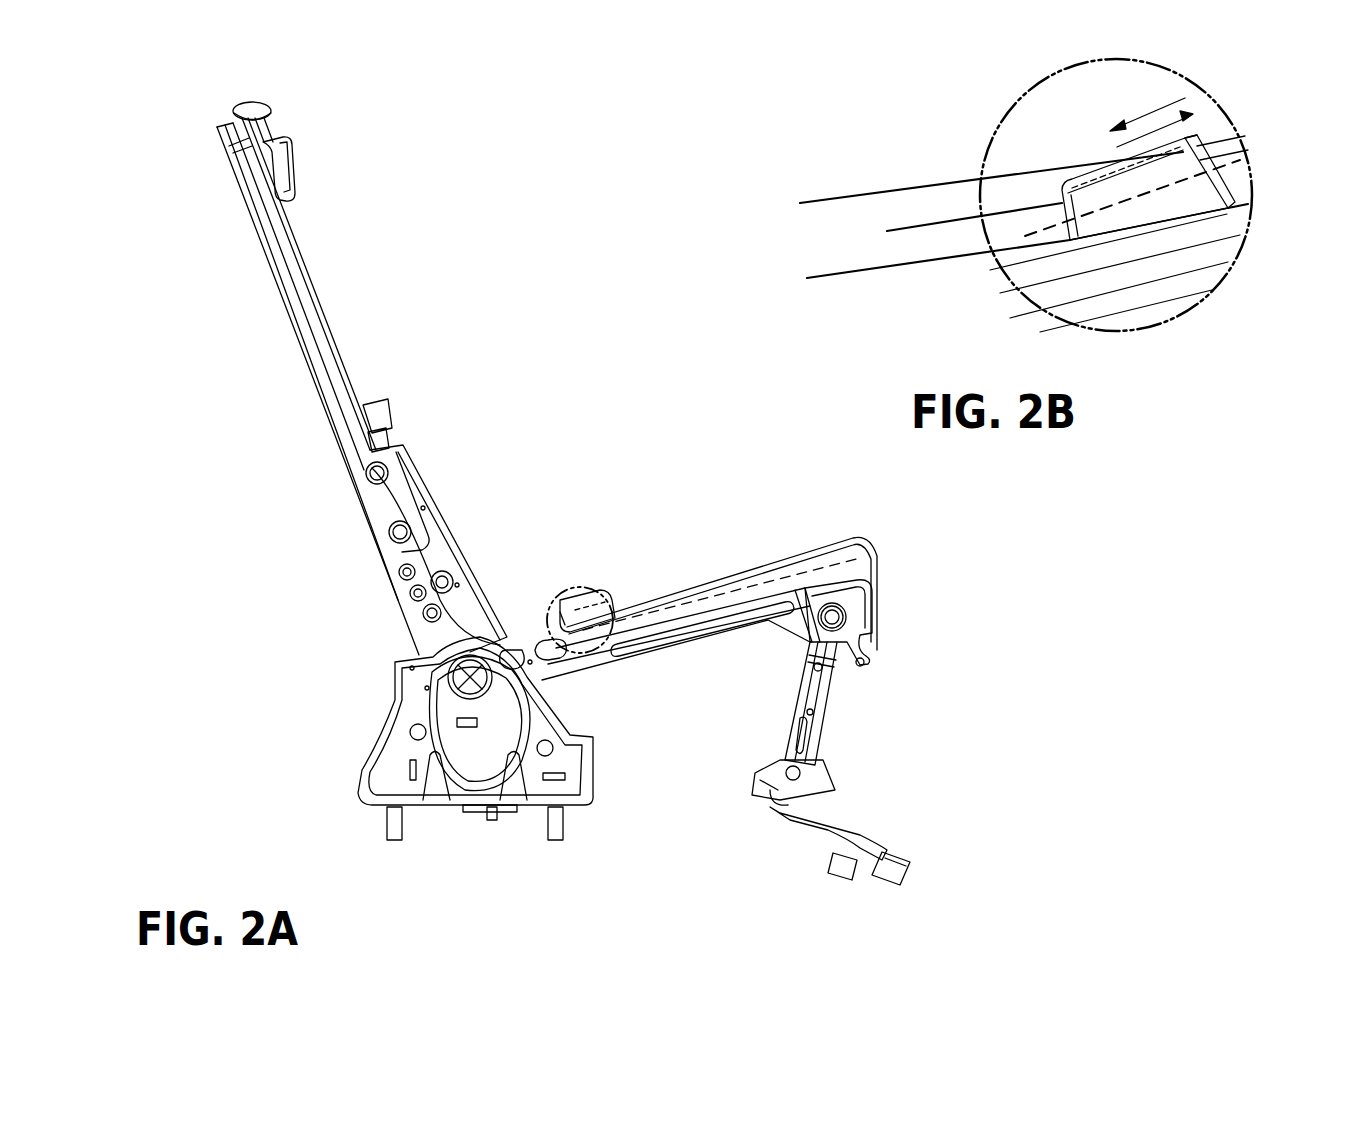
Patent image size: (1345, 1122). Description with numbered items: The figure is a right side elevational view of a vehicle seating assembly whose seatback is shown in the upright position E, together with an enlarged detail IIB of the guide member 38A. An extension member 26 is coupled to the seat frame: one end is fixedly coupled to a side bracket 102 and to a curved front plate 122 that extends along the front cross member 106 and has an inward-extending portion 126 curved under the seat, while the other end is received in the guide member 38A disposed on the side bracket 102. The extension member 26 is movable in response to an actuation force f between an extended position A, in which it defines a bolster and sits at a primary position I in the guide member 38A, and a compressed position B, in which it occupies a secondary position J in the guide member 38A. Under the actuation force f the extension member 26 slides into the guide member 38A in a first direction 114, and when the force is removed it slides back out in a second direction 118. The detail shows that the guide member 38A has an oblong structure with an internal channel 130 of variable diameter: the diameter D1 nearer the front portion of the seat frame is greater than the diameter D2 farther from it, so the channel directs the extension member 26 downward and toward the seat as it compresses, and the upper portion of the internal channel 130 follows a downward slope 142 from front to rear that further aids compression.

In FIG. 2A, the extension member 26 is at (752, 560).
In FIG. 2B, the extension member 26 is at (1132, 198).
In FIG. 2A, the guide member 38A is at (562, 613).
In FIG. 2B, the guide member 38A is at (1078, 250).
In FIG. 2A, the side bracket 102 is at (796, 624).
In FIG. 2A, the front cross member 106 is at (860, 620).
In FIG. 2B, the first direction 114 is at (1153, 110).
In FIG. 2B, the second direction 118 is at (1168, 128).
In FIG. 2A, the front plate 122 is at (878, 595).
In FIG. 2A, the inward-extending portion 126 is at (864, 668).
In FIG. 2B, the internal channel 130 is at (1193, 192).
In FIG. 2B, the downward slope 142 is at (1240, 152).
In FIG. 2A, the upright position E is at (246, 309).
In FIG. 2A, the extended position A is at (870, 540).
In FIG. 2A, the compressed position B is at (688, 590).
In FIG. 2A, the actuation force f is at (818, 526).
In FIG. 2A, the primary position I is at (605, 598).
In FIG. 2A, the secondary position J is at (575, 635).
In FIG. 2A, the detail view IIB is at (590, 587).
In FIG. 2B, the diameter of the internal channel closer to the front portion D1 is at (903, 220).
In FIG. 2B, the diameter of the internal channel further from the front portion D2 is at (910, 280).